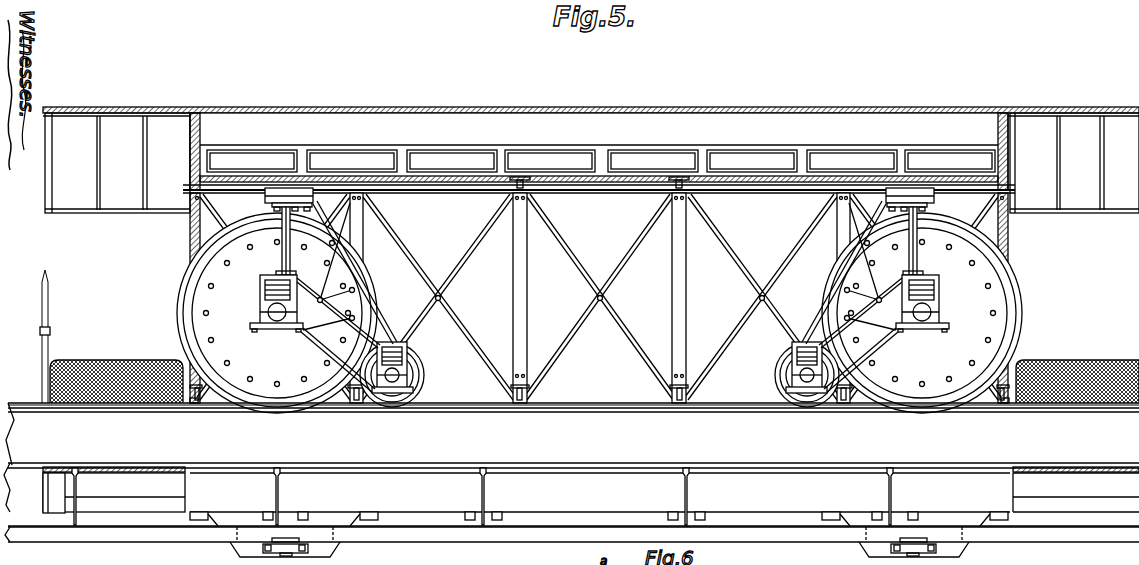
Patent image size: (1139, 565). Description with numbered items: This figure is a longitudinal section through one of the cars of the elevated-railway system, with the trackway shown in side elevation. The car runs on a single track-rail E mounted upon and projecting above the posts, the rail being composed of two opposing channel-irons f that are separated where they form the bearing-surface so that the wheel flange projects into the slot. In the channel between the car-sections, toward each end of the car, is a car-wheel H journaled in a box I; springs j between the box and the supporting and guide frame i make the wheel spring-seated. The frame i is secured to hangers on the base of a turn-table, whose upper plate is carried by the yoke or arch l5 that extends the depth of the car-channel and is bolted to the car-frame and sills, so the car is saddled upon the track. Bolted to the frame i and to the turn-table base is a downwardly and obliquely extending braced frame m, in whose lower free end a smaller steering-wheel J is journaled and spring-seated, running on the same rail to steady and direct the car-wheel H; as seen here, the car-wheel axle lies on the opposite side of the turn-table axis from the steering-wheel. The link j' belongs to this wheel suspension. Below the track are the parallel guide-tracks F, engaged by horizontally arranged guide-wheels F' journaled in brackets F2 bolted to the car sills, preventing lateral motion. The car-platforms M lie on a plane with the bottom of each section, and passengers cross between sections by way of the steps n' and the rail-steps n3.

The car-wheel H is at (599, 313).
The steering-wheel J is at (425, 374).
The journal-box I is at (260, 312).
The supporting and guide frame i is at (282, 258).
The braced frame m is at (355, 283).
The spring j is at (680, 329).
The link j' is at (806, 328).
The yoke or arch l5 is at (527, 387).
The rail-step n3 is at (215, 403).
The track-rail E is at (572, 434).
The channel-iron f is at (628, 431).
The step n' is at (591, 489).
The bracket F2 is at (297, 515).
The car-platform M is at (55, 496).
The guide-track F is at (572, 546).
The guide-wheel F' is at (599, 546).